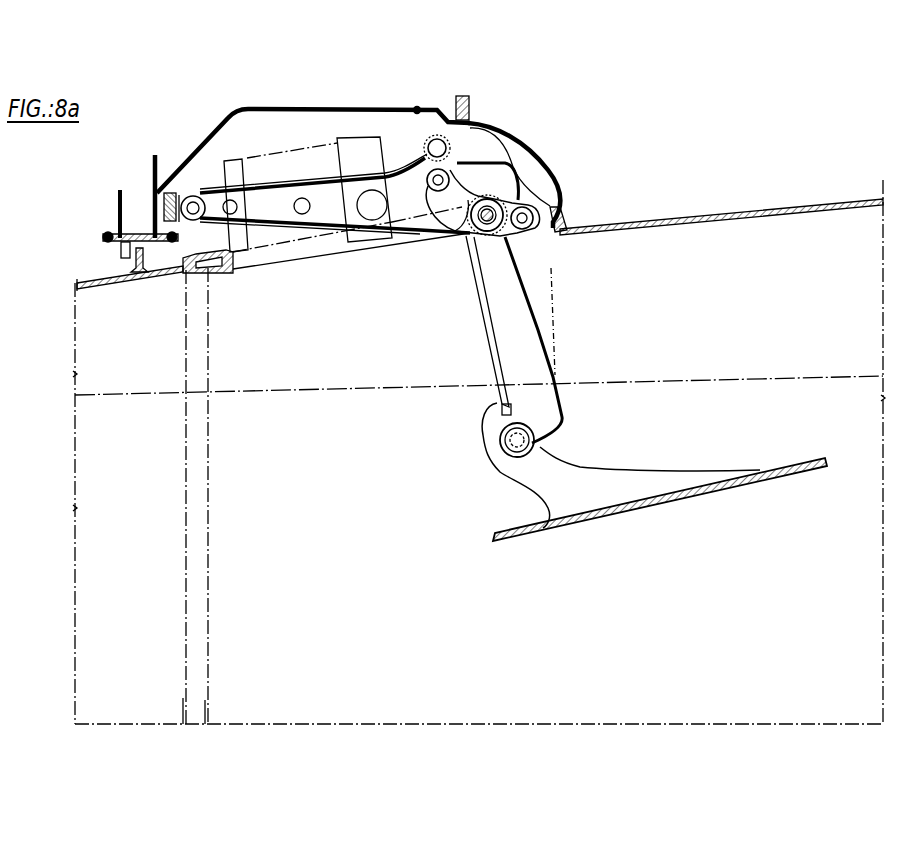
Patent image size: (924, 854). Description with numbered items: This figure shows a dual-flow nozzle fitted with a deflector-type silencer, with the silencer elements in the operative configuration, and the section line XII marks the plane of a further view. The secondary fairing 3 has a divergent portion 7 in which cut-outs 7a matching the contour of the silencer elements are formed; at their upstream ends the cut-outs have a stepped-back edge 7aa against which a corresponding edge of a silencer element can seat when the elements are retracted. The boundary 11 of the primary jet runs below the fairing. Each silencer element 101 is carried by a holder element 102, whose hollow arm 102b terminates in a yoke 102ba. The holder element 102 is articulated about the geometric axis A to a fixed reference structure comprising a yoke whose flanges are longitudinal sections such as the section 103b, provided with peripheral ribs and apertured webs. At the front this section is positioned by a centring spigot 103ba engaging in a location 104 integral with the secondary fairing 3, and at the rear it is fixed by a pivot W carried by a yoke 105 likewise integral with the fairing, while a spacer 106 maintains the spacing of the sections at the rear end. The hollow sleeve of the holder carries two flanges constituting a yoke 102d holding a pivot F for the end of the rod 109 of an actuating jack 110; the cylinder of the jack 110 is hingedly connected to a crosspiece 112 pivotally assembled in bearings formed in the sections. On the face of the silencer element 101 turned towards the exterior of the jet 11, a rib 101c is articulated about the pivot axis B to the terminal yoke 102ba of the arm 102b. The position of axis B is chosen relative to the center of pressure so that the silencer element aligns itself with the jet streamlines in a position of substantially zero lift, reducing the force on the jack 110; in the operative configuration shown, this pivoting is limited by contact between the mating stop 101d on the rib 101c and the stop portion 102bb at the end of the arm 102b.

The secondary fairing 3 is at (372, 105).
The divergent portion 7 is at (780, 219).
The cut-outs 7a is at (320, 256).
The stepped-back edge 7aa is at (233, 275).
The boundary of the primary jet 11 is at (768, 379).
The silencer element 101 is at (773, 462).
The rib 101c is at (587, 477).
The mating stop 101d is at (503, 412).
The holder element 102 is at (553, 378).
The arm 102b is at (523, 353).
The yoke 102ba is at (553, 418).
The stop portion 102bb is at (505, 405).
The yoke 102d is at (455, 219).
The longitudinal section 103b is at (298, 180).
The centring spigot 103ba is at (147, 180).
The location 104 is at (148, 218).
The yoke 105 is at (483, 153).
The spacer 106 is at (533, 218).
The rod 109 is at (407, 192).
The jack 110 is at (258, 167).
The crosspiece 112 is at (191, 195).
The geometric axis A is at (490, 211).
The pivot axis B is at (507, 453).
The pivot F is at (428, 172).
The pivot W is at (437, 137).
The section line XII is at (522, 93).